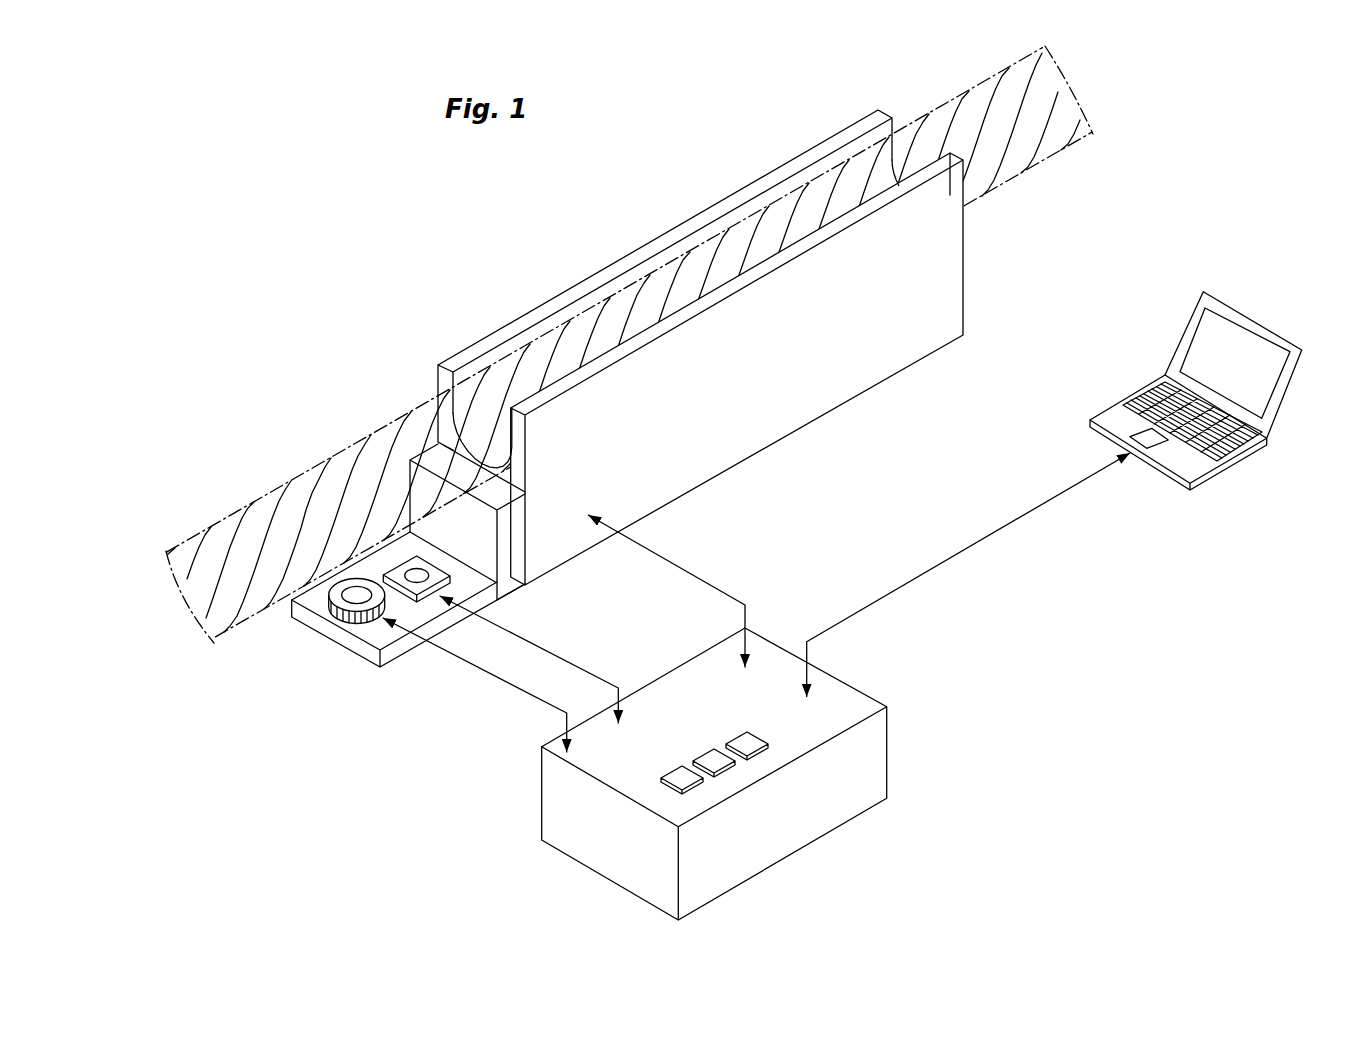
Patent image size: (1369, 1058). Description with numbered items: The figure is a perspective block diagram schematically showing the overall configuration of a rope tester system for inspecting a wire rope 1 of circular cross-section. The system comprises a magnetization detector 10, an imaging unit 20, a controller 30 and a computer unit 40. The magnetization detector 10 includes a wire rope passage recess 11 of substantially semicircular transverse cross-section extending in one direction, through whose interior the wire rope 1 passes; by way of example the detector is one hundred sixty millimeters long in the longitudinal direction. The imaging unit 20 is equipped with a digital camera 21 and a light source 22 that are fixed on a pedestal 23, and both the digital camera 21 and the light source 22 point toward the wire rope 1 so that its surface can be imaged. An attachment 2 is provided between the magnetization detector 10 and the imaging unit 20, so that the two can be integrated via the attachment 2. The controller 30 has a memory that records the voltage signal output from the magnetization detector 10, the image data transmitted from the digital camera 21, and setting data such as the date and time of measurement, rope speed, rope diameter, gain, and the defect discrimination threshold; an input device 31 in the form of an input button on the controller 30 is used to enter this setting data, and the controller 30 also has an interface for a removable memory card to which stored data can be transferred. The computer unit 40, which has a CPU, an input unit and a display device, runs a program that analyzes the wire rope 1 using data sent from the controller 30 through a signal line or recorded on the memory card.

The wire rope 1 is at (928, 115).
The magnetization detector 10 is at (963, 289).
The wire rope passage recess 11 is at (484, 370).
The attachment 2 is at (513, 582).
The imaging unit 20 is at (416, 652).
The digital camera 21 is at (312, 650).
The light source 22 is at (440, 581).
The pedestal 23 is at (398, 648).
The controller 30 is at (761, 774).
The input device 31 is at (670, 783).
The computer unit 40 is at (1235, 458).